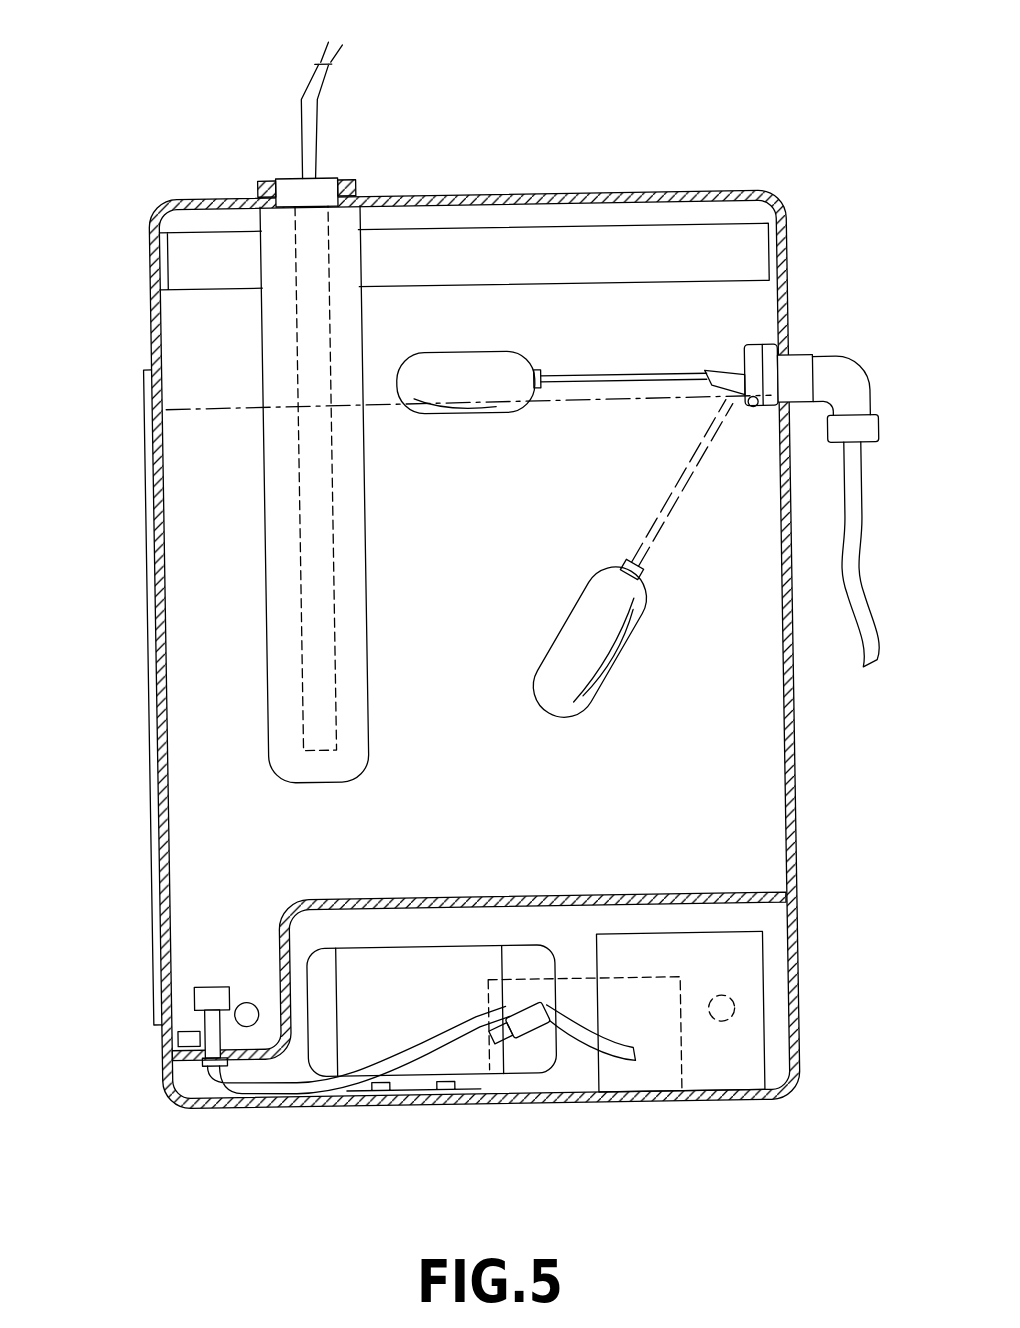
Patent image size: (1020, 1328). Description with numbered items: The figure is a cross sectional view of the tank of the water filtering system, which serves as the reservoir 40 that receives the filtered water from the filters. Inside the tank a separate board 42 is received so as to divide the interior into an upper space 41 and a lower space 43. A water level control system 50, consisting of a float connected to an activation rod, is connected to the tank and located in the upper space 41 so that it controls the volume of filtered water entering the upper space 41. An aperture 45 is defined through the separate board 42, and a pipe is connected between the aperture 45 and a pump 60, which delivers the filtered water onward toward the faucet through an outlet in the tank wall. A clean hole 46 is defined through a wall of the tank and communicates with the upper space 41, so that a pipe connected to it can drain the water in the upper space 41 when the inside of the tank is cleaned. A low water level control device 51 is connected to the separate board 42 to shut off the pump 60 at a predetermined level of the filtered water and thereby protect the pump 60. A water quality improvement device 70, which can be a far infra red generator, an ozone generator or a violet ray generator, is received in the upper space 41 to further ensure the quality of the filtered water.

The reservoir 40 is at (500, 130).
The upper space 41 is at (709, 749).
The separate board 42 is at (731, 897).
The lower space 43 is at (770, 978).
The aperture 45 is at (174, 1036).
The clean hole 46 is at (244, 1023).
The water level control system 50 is at (659, 383).
The low water level control device 51 is at (208, 984).
The pump 60 is at (400, 1089).
The water quality improvement device 70 is at (271, 575).